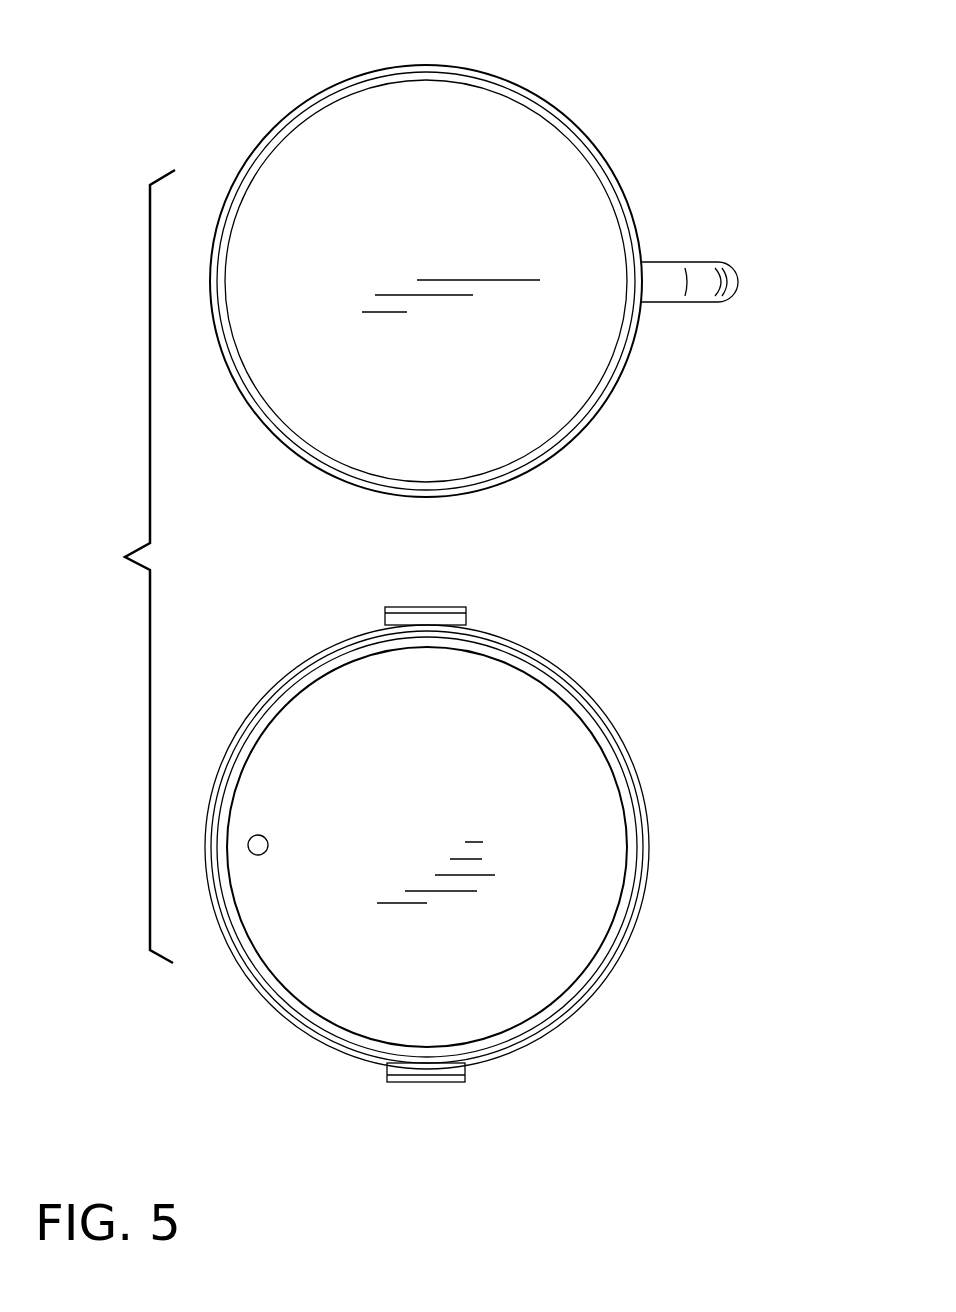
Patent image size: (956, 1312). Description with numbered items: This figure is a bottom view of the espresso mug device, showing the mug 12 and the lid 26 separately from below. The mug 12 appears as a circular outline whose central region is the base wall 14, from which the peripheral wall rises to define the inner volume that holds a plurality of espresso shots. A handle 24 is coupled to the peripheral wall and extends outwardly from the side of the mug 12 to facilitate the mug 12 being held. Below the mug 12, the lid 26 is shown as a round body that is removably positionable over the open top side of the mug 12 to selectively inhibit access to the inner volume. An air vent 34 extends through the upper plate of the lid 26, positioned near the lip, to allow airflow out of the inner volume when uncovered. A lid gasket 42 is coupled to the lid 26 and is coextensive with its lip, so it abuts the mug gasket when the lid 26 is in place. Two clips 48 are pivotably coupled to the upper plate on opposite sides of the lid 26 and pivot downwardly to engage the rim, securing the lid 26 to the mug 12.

The mug 12 is at (505, 250).
The base wall 14 is at (550, 206).
The handle 24 is at (683, 291).
The lid 26 is at (505, 843).
The air vent 34 is at (250, 843).
The lid gasket 42 is at (618, 785).
The clip 48 is at (395, 615).